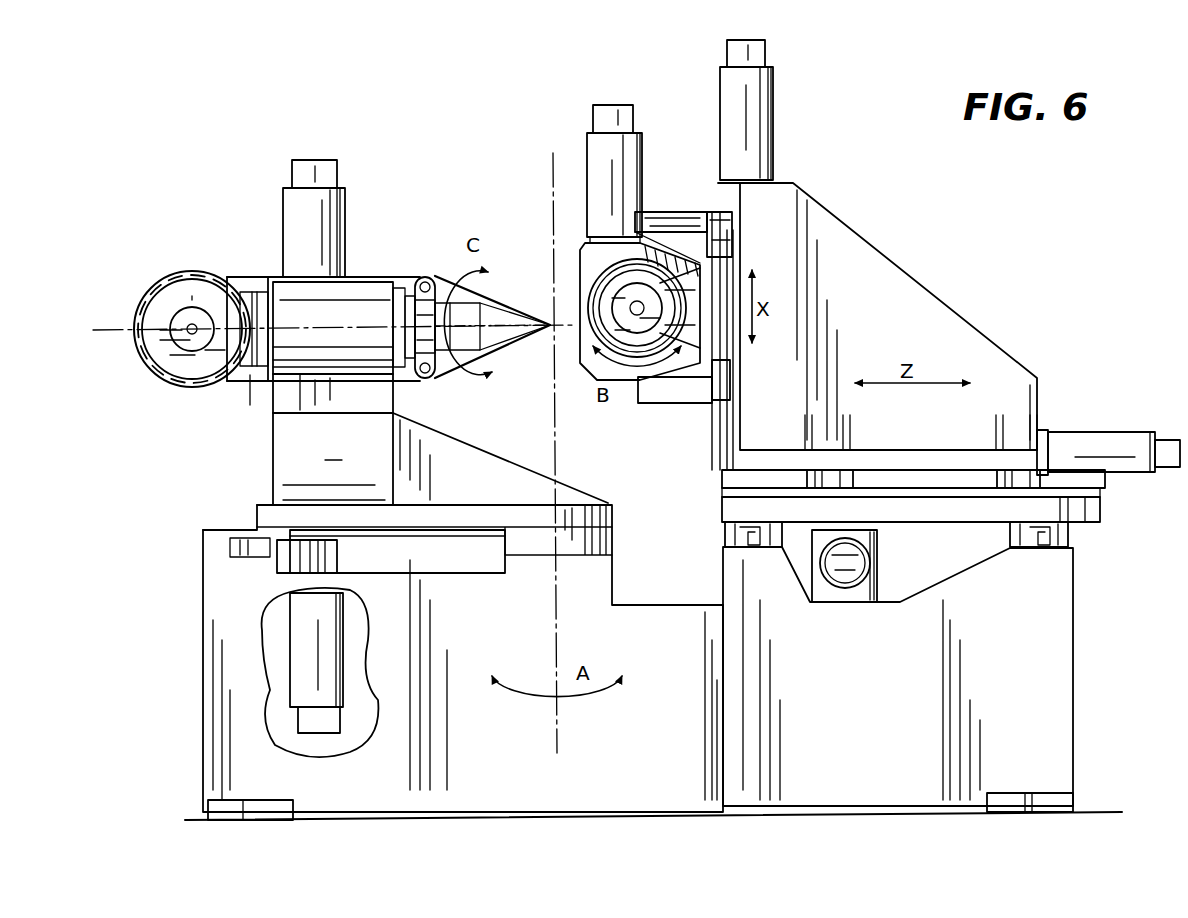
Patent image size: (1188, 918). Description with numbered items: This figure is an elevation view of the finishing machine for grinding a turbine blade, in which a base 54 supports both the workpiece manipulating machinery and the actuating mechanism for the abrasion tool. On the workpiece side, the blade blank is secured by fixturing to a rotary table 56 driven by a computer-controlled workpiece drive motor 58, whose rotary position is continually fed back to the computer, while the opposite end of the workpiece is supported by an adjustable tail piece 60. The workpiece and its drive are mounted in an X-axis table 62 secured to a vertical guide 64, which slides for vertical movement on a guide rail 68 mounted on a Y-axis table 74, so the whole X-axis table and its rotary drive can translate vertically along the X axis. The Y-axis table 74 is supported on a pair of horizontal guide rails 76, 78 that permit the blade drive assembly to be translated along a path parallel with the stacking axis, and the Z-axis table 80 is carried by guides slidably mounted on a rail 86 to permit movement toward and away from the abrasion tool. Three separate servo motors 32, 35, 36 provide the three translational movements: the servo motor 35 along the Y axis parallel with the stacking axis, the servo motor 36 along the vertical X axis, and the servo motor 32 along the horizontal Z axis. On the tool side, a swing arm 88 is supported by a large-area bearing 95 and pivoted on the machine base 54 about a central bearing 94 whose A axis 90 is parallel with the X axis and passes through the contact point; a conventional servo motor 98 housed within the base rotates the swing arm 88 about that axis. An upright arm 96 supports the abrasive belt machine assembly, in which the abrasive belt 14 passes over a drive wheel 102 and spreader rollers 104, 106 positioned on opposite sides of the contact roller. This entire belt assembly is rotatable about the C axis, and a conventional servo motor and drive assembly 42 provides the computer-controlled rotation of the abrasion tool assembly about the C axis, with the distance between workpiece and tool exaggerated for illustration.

The abrasive belt 14 is at (253, 277).
The servo motor 32 is at (1112, 440).
The servo motor 35 is at (877, 580).
The servo motor 36 is at (750, 60).
The servo motor and drive assembly 42 is at (312, 160).
The base 54 is at (907, 763).
The rotary table 56 is at (583, 268).
The workpiece drive motor 58 is at (612, 105).
The adjustable tail piece 60 is at (693, 328).
The X-axis table 62 is at (680, 405).
The vertical guide 64 is at (707, 410).
The guide rail 68 is at (707, 225).
The Y-axis table 74 is at (1100, 510).
The horizontal guide rail 76 is at (752, 547).
The horizontal guide rail 78 is at (1045, 547).
The Z-axis table 80 is at (868, 237).
The rail 86 is at (935, 470).
The swing arm 88 is at (273, 458).
The A axis 90 is at (553, 205).
The central bearing 94 is at (553, 555).
The large-area bearing 95 is at (255, 546).
The upright arm 96 is at (268, 403).
The servo motor 98 is at (350, 690).
The drive wheel 102 is at (162, 310).
The spreader roller 104 is at (427, 280).
The spreader roller 106 is at (430, 378).